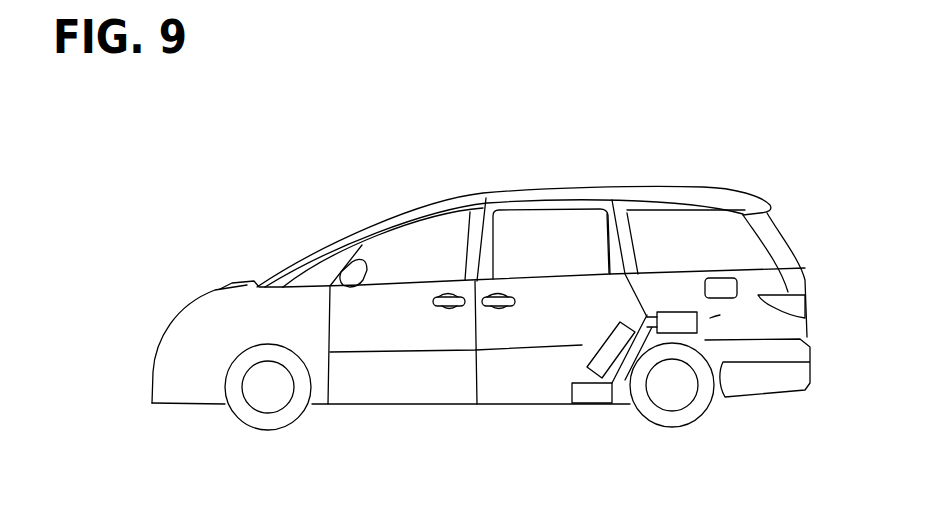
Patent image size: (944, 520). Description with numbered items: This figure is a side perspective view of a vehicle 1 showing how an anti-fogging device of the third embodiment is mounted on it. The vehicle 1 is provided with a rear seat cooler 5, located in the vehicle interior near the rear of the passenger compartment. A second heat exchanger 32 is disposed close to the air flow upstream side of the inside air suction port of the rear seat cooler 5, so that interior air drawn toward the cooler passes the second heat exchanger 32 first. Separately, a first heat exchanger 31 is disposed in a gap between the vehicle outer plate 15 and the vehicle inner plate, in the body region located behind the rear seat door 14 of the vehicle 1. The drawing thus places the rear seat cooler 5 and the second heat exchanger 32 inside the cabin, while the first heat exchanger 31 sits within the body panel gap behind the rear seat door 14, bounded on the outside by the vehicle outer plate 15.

The vehicle 1 is at (305, 239).
The rear seat cooler 5 is at (610, 338).
The rear seat door 14 is at (608, 290).
The vehicle outer plate 15 is at (710, 318).
The first heat exchanger 31 is at (690, 322).
The second heat exchanger 32 is at (587, 397).